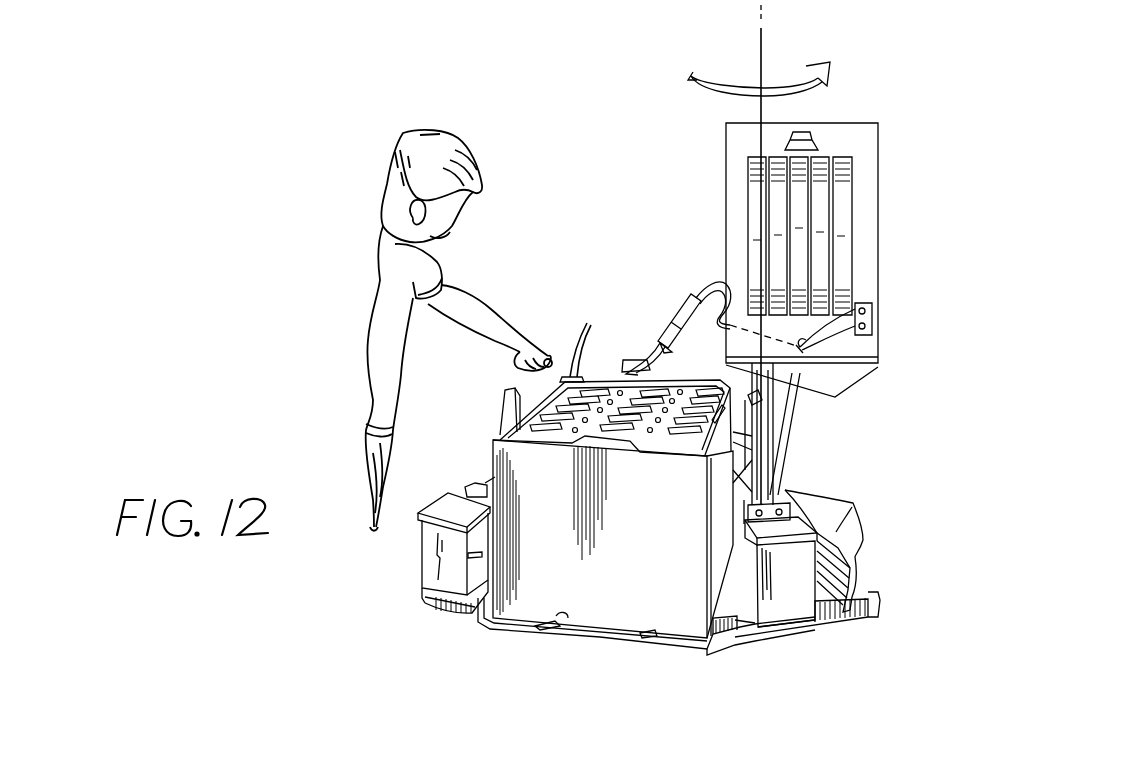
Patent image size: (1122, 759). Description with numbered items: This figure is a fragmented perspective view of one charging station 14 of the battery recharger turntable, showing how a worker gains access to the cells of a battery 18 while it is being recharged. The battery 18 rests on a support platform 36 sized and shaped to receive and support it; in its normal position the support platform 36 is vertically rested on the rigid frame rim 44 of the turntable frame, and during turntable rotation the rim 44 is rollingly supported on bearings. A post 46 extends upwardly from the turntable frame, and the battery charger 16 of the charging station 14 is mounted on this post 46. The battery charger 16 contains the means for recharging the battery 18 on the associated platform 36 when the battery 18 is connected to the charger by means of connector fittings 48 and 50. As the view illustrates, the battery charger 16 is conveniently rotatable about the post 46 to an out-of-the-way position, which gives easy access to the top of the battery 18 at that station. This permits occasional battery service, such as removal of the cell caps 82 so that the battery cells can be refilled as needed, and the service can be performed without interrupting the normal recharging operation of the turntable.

The charging station 14 is at (486, 640).
The battery charger 16 is at (852, 130).
The battery 18 is at (508, 457).
The support platform 36 is at (852, 520).
The frame rim 44 is at (765, 627).
The post 46 is at (766, 420).
The connector fitting 48 is at (662, 326).
The connector fitting 50 is at (687, 300).
The cell cap 82 is at (545, 358).